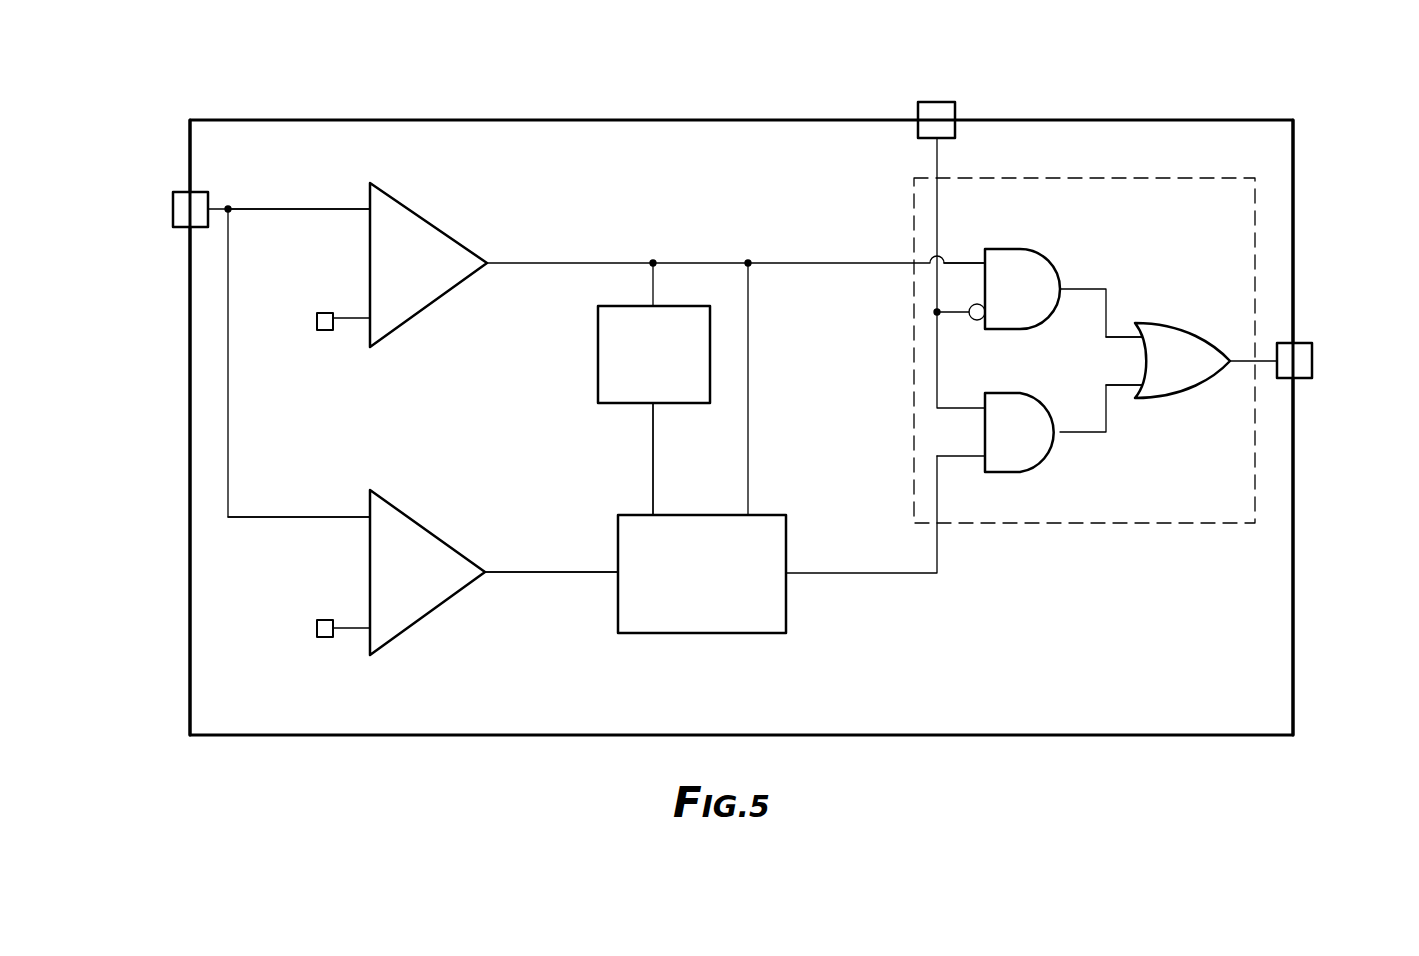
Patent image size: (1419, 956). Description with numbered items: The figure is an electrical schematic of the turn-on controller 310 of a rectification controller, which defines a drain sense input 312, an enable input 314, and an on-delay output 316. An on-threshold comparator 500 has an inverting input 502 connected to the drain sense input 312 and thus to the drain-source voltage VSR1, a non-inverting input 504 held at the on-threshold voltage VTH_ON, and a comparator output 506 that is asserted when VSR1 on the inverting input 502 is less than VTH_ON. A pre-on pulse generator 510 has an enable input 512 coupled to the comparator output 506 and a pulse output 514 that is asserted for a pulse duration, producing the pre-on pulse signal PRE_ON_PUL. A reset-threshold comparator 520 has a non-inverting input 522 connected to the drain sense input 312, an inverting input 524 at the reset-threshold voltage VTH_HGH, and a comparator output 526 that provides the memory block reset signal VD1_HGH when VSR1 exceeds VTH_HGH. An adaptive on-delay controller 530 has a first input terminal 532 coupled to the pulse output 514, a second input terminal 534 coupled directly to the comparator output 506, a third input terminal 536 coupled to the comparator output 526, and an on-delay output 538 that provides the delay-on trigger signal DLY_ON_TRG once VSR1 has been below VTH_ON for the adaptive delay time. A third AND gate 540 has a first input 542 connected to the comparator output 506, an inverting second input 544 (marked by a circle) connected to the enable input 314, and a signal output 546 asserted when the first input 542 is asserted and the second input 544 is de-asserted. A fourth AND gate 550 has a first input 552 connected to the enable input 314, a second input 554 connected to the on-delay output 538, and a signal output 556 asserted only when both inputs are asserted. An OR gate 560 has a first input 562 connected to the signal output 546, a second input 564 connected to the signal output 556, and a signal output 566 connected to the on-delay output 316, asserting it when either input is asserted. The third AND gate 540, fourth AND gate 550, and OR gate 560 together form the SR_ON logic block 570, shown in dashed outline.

The turn-on controller 310 is at (688, 120).
The drain sense input 312 is at (173, 202).
The enable input 314 is at (955, 108).
The on-delay output 316 is at (1312, 365).
The on-threshold comparator 500 is at (425, 215).
The inverting input 502 is at (370, 209).
The non-inverting input 504 is at (370, 318).
The comparator output 506 is at (487, 263).
The pre-on pulse generator 510 is at (598, 336).
The enable input 512 is at (653, 306).
The pulse output 514 is at (653, 405).
The reset-threshold comparator 520 is at (425, 522).
The non-inverting input 522 is at (370, 517).
The inverting input 524 is at (370, 628).
The comparator output 526 is at (485, 572).
The adaptive on-delay controller 530 is at (786, 530).
The first input terminal 532 is at (653, 515).
The second input terminal 534 is at (748, 515).
The third input terminal 536 is at (618, 572).
The on-delay output 538 is at (786, 573).
The third AND gate 540 is at (1010, 249).
The first input 542 is at (985, 263).
The second input 544 is at (969, 315).
The signal output 546 is at (1060, 289).
The fourth AND gate 550 is at (1015, 472).
The first input 552 is at (985, 410).
The second input 554 is at (985, 455).
The signal output 556 is at (1062, 436).
The OR gate 560 is at (1173, 323).
The first input 562 is at (1142, 337).
The second input 564 is at (1142, 385).
The signal output 566 is at (1230, 361).
The SR_ON logic block 570 is at (1170, 178).